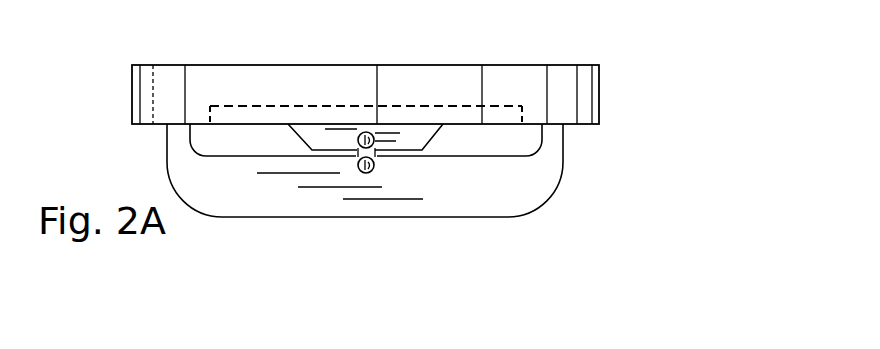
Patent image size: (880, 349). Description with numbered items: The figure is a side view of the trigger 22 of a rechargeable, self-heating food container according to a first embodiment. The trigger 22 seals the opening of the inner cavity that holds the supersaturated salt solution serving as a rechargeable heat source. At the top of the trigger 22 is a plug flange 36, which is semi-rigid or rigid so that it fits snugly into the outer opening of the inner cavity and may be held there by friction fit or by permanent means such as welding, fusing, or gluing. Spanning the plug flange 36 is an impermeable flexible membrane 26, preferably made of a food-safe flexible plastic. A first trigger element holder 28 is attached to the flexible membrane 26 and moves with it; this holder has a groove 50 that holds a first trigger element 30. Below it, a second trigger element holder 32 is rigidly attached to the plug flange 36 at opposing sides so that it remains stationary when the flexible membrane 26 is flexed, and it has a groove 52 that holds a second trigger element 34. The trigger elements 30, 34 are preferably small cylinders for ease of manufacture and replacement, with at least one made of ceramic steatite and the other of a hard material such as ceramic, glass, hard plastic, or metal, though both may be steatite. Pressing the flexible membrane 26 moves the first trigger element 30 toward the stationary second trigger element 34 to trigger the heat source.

The trigger 22 is at (662, 82).
The flexible membrane 26 is at (210, 108).
The first trigger element holder 28 is at (315, 135).
The first trigger element 30 is at (376, 135).
The second trigger element holder 32 is at (557, 196).
The second trigger element 34 is at (374, 166).
The plug flange 36 is at (581, 65).
The groove 50 is at (363, 132).
The groove 52 is at (366, 173).